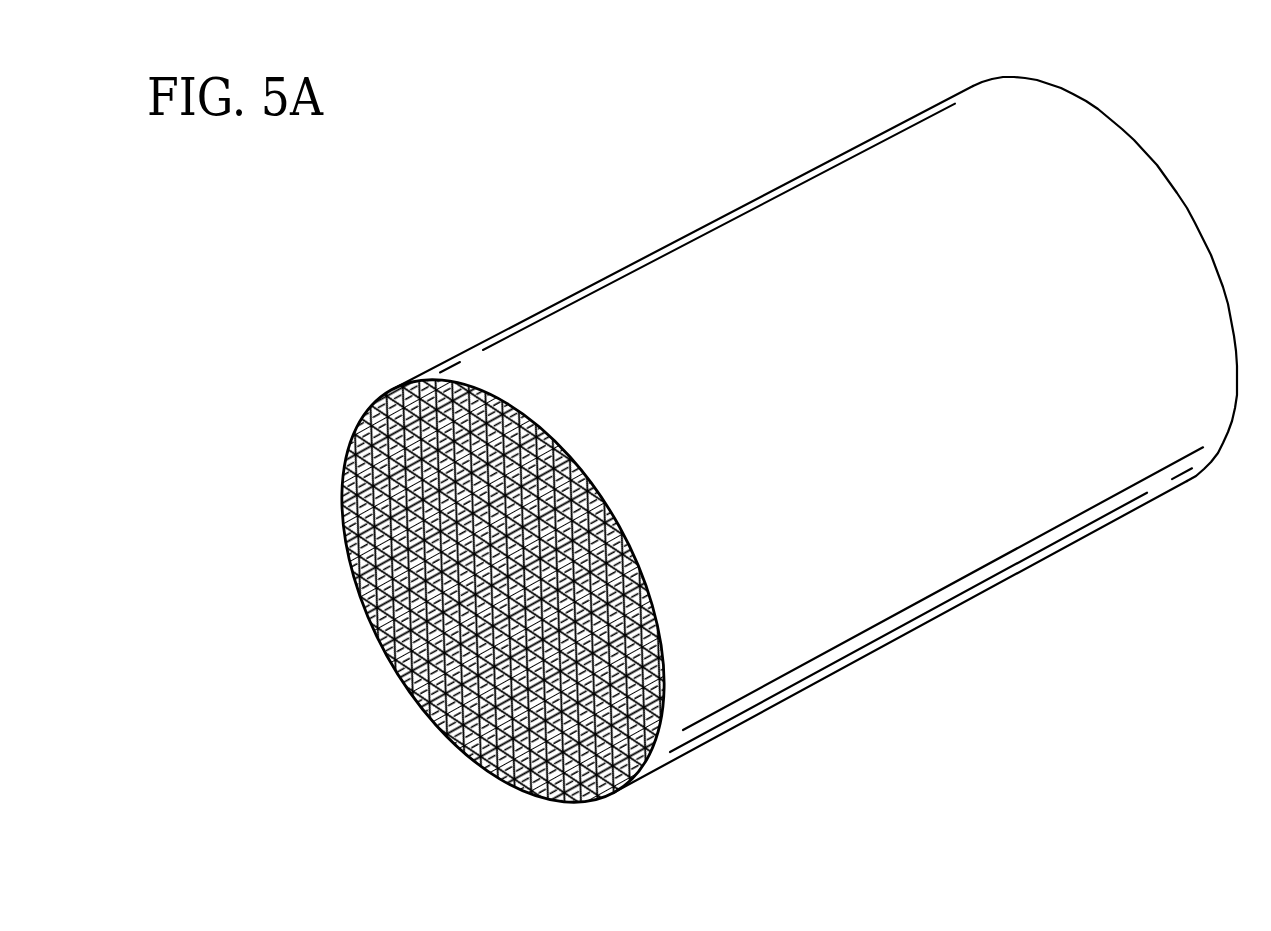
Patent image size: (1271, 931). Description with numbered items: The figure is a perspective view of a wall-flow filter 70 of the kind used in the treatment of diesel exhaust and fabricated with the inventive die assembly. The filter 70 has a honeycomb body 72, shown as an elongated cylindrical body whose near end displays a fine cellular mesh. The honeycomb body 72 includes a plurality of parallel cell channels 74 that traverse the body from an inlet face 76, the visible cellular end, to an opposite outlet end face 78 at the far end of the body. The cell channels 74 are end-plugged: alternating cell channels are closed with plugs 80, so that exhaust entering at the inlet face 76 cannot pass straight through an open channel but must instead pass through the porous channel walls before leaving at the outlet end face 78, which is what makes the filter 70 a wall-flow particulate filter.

The filter 70 is at (600, 282).
The honeycomb body 72 is at (698, 250).
The cell channels 74 is at (343, 533).
The inlet face 76 is at (364, 418).
The outlet end face 78 is at (1080, 112).
The plugs 80 is at (385, 647).